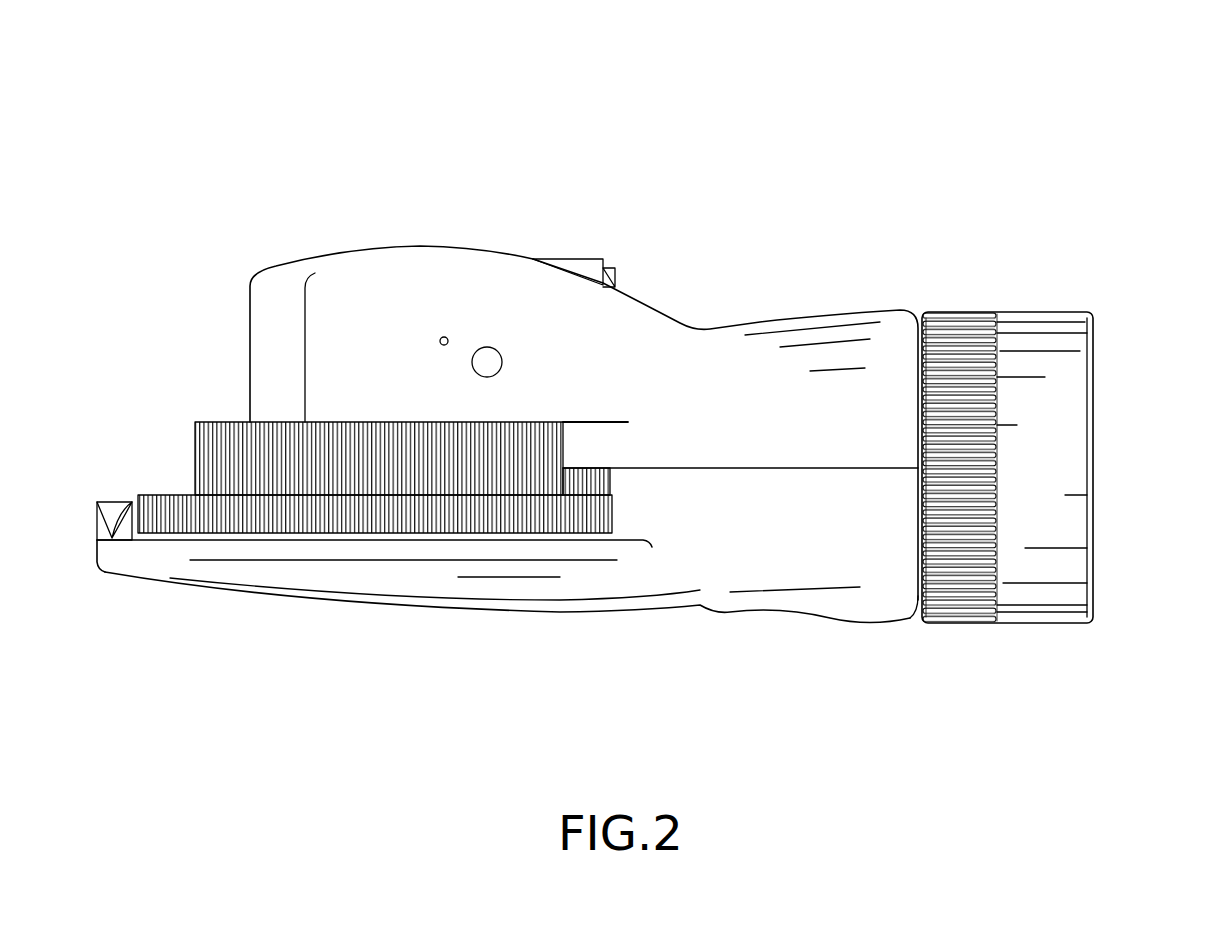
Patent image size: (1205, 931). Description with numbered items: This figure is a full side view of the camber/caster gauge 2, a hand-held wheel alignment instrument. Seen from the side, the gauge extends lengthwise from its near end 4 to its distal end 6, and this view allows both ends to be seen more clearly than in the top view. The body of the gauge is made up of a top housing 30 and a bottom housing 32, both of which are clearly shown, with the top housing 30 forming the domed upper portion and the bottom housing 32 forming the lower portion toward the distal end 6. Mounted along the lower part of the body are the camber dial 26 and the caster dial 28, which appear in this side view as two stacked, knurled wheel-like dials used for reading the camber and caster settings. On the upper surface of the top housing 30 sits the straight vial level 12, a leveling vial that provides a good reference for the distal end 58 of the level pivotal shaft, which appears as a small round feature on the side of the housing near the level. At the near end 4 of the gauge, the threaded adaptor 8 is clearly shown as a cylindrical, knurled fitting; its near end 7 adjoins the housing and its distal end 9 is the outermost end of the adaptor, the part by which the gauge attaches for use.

The camber/caster gauge 2 is at (770, 108).
The near end 4 is at (855, 312).
The distal end 6 is at (105, 572).
The near end of the threaded adaptor 7 is at (1093, 312).
The threaded adaptor 8 is at (1093, 405).
The distal end of the threaded adaptor 9 is at (918, 624).
The straight vial level 12 is at (597, 260).
The camber dial 26 is at (293, 517).
The caster dial 28 is at (490, 474).
The top housing 30 is at (372, 265).
The bottom housing 32 is at (685, 606).
The distal end of the level pivotal shaft 58 is at (487, 348).